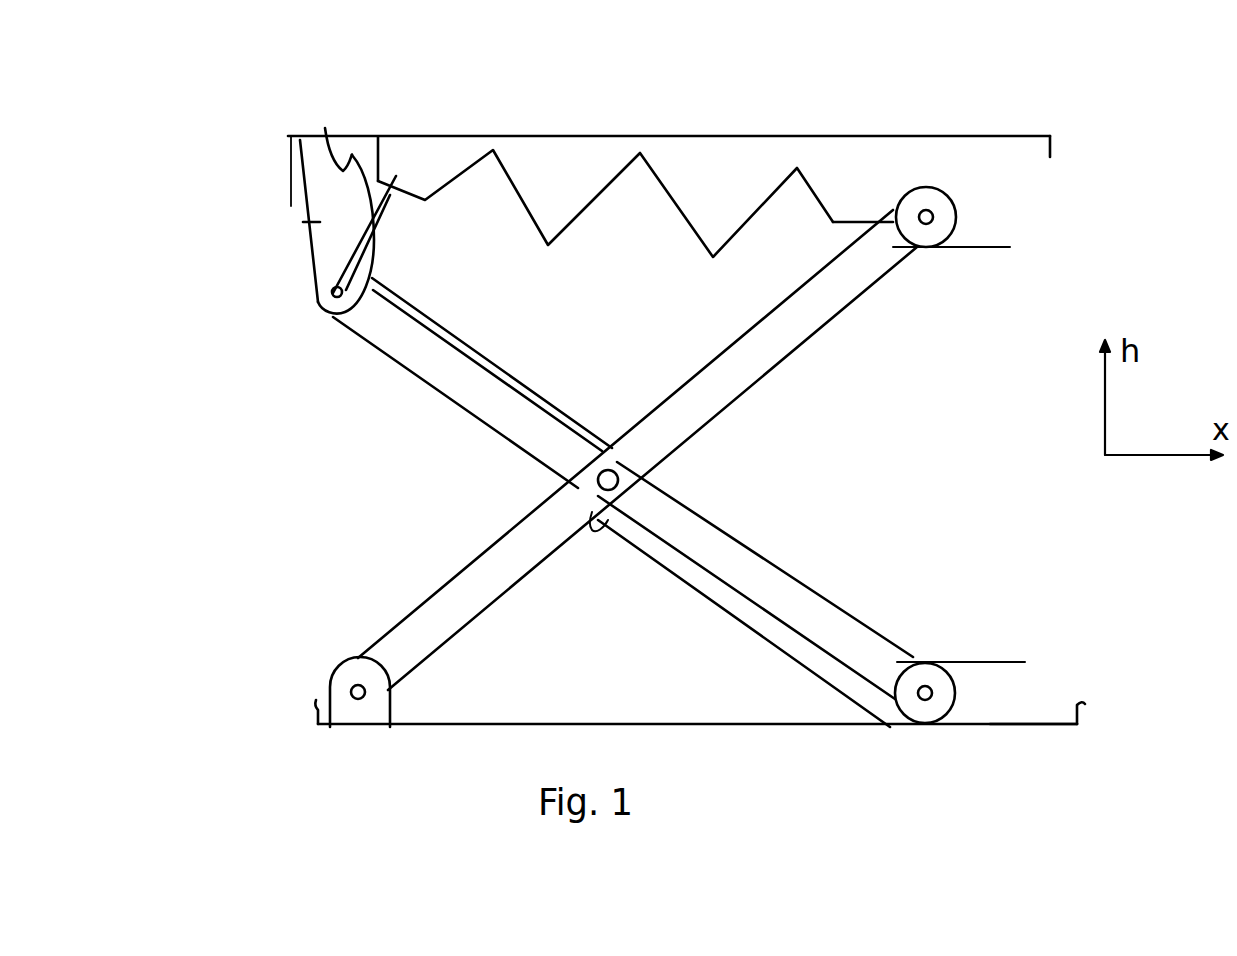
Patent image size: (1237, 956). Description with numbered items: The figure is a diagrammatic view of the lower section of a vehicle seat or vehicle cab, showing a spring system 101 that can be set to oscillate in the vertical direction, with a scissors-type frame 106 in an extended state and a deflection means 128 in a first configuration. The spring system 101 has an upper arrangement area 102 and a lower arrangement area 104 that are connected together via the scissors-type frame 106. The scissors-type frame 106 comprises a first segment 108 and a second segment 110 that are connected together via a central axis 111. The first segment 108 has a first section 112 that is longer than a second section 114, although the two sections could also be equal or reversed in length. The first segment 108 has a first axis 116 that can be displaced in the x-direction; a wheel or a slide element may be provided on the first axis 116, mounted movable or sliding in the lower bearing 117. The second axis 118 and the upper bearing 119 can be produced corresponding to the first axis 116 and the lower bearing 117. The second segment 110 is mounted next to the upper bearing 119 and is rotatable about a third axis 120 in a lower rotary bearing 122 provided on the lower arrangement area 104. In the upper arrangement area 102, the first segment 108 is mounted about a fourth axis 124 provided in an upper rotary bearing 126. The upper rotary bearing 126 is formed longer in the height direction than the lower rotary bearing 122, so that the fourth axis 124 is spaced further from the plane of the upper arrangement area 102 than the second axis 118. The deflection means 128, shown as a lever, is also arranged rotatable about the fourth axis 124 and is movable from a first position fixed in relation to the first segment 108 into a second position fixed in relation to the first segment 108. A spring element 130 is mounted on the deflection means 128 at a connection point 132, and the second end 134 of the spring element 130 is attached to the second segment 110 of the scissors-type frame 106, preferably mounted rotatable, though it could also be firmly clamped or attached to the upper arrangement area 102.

The spring system 101 is at (1085, 194).
The upper arrangement area 102 is at (868, 133).
The lower arrangement area 104 is at (700, 757).
The scissors-type frame 106 is at (663, 434).
The first segment 108 is at (642, 467).
The second segment 110 is at (868, 268).
The central axis 111 is at (585, 484).
The first section 112 is at (746, 611).
The second section 114 is at (483, 352).
The first axis 116 is at (927, 690).
The lower bearing 117 is at (998, 700).
The second axis 118 is at (926, 217).
The upper bearing 119 is at (1010, 247).
The third axis 120 is at (357, 700).
The lower rotary bearing 122 is at (336, 680).
The fourth axis 124 is at (318, 306).
The upper rotary bearing 126 is at (303, 222).
The deflection means 128 is at (343, 172).
The spring element 130 is at (606, 180).
The connection point 132 is at (405, 152).
The second end 134 is at (846, 172).